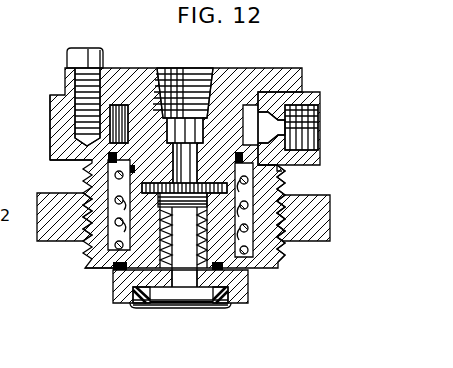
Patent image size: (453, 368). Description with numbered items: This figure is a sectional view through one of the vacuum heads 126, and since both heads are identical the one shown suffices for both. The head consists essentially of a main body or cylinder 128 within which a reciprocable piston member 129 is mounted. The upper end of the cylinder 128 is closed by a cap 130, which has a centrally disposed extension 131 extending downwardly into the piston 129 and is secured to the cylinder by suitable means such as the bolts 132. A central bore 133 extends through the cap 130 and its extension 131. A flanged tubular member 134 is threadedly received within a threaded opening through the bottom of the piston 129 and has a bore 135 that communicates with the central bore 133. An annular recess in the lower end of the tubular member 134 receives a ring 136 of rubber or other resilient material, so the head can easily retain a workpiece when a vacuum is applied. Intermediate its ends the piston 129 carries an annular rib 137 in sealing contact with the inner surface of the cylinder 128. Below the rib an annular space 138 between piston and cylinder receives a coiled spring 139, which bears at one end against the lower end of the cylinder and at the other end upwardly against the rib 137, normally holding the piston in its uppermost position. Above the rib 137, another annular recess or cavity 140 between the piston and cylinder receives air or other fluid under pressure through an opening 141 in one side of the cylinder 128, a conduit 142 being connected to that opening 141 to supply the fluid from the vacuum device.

The valve assembly 126 is at (304, 68).
The main body or cylinder 128 is at (282, 183).
The reciprocable piston member 129 is at (107, 268).
The cap 130 is at (250, 76).
The extension 131 is at (92, 162).
The bolts 132 is at (103, 64).
The central bore 133 is at (199, 78).
The flanged tubular member 134 is at (250, 287).
The bore 135 is at (168, 282).
The ring 136 is at (215, 306).
The annular rib 137 is at (318, 150).
The annular space 138 is at (279, 241).
The coiled spring 139 is at (329, 213).
The annular recess or cavity 140 is at (110, 128).
The opening 141 is at (318, 108).
The conduit 142 is at (25, 132).